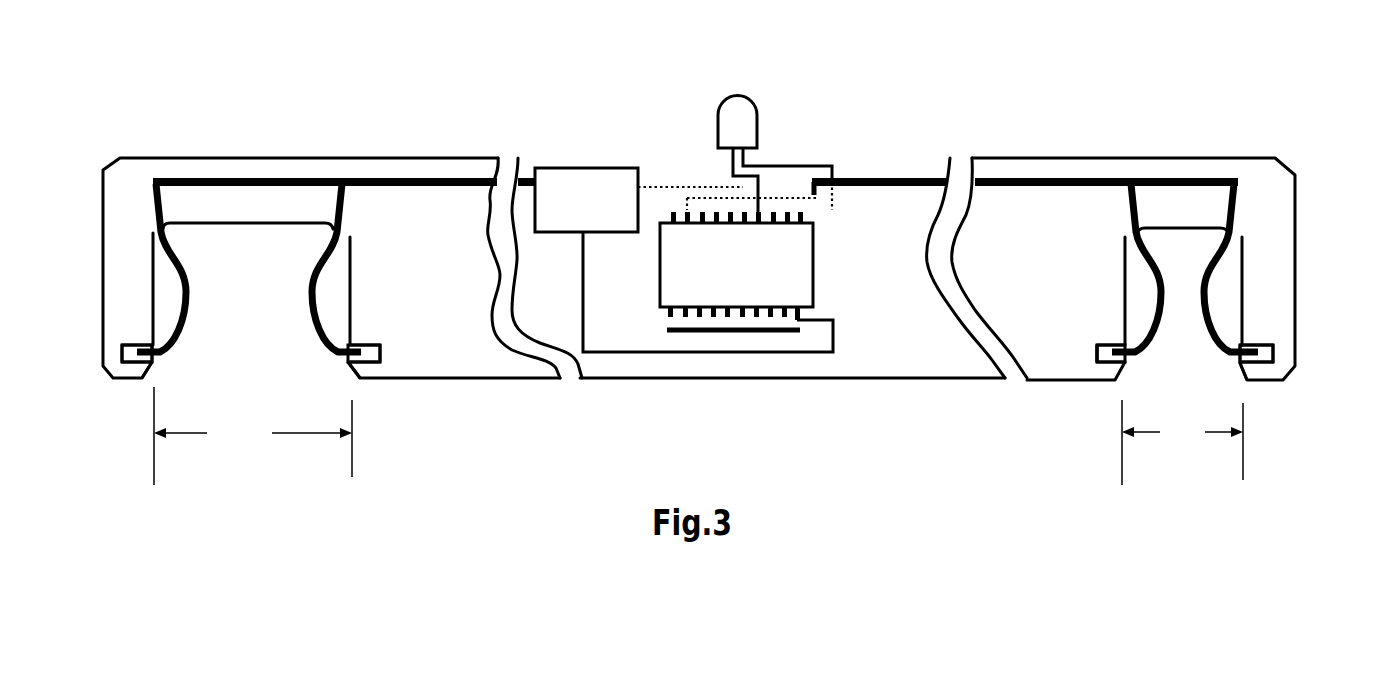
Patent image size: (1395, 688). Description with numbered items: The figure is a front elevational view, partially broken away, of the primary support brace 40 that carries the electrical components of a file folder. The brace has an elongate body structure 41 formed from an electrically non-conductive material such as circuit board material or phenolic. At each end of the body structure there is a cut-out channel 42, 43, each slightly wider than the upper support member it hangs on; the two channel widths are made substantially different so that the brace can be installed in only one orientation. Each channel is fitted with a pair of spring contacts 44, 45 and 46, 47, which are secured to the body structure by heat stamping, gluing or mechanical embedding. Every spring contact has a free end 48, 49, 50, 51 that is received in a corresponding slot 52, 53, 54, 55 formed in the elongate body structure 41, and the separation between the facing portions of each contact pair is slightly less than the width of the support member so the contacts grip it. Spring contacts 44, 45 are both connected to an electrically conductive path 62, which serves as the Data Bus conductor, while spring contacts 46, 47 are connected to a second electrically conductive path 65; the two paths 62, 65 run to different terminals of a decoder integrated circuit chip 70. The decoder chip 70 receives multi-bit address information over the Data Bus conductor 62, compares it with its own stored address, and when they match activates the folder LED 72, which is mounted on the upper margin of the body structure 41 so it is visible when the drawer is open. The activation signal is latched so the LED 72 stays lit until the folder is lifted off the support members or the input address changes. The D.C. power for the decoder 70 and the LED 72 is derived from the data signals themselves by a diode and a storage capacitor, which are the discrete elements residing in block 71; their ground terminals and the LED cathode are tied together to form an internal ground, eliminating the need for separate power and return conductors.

The primary support brace 40 is at (556, 152).
The elongate body structure 41 is at (380, 168).
The cut-out channel 42 is at (253, 436).
The cut-out channel 43 is at (1182, 442).
The spring contact 44 is at (185, 323).
The spring contact 45 is at (318, 347).
The spring contact 46 is at (1160, 347).
The spring contact 47 is at (1207, 338).
The free end 48 is at (150, 362).
The free end 49 is at (345, 360).
The free end 50 is at (1110, 363).
The free end 51 is at (1232, 363).
The slot 52 is at (125, 352).
The slot 53 is at (380, 350).
The slot 54 is at (1097, 357).
The slot 55 is at (1275, 357).
The electrically conductive path 62 is at (222, 178).
The electrically conductive path 65 is at (930, 183).
The decoder integrated circuit chip 70 is at (755, 260).
The block 71 is at (585, 190).
The folder LED 72 is at (774, 136).